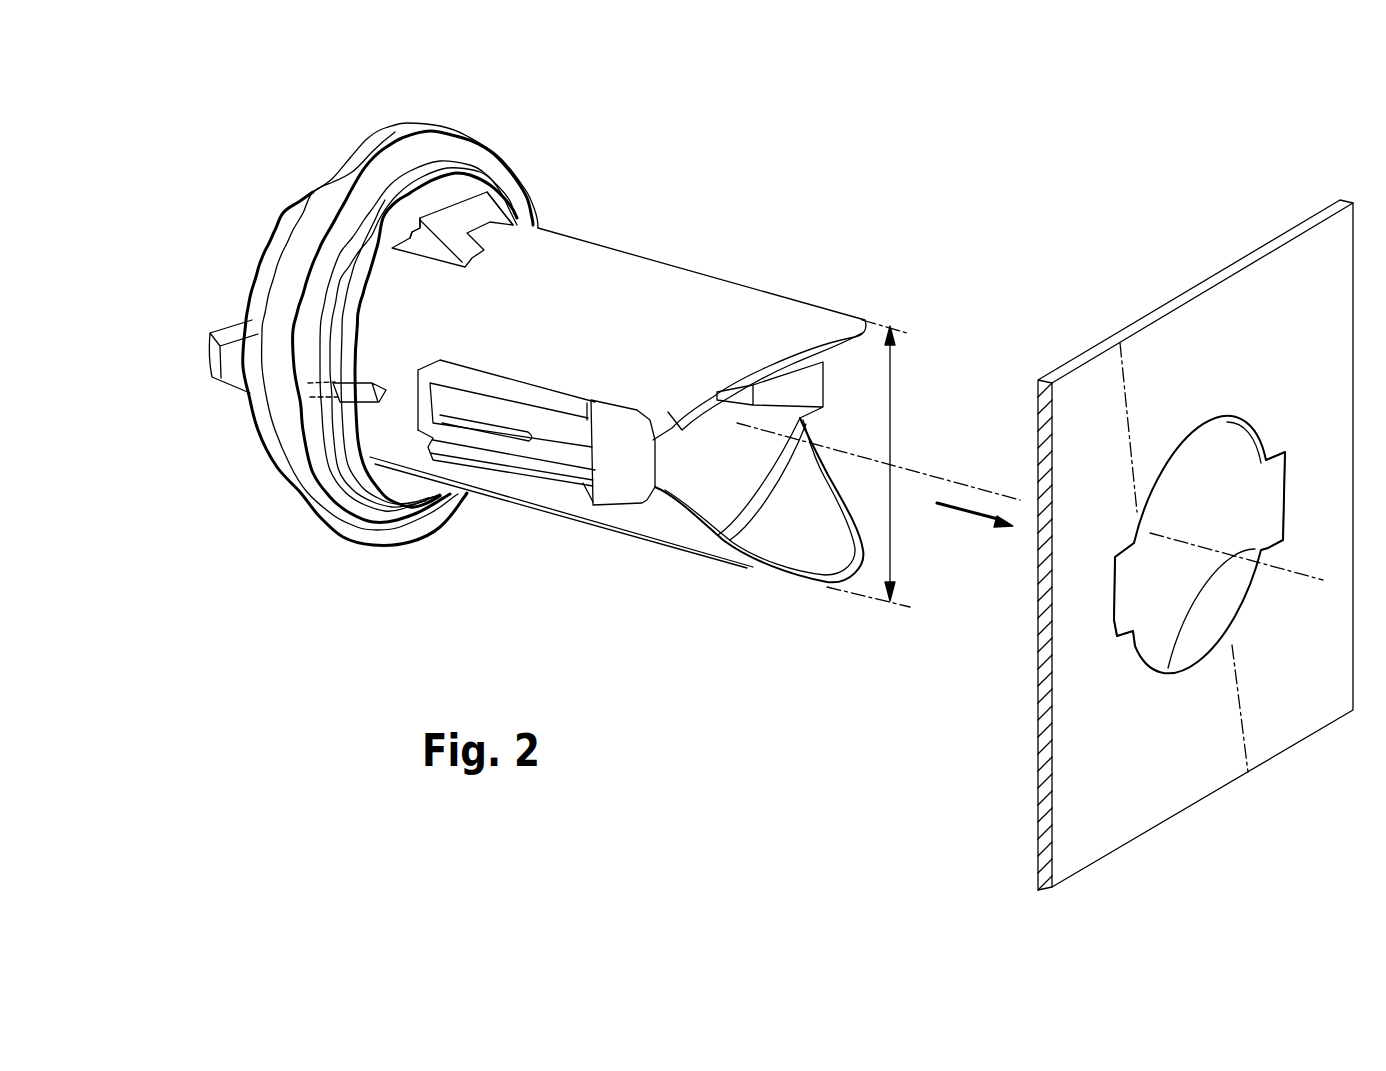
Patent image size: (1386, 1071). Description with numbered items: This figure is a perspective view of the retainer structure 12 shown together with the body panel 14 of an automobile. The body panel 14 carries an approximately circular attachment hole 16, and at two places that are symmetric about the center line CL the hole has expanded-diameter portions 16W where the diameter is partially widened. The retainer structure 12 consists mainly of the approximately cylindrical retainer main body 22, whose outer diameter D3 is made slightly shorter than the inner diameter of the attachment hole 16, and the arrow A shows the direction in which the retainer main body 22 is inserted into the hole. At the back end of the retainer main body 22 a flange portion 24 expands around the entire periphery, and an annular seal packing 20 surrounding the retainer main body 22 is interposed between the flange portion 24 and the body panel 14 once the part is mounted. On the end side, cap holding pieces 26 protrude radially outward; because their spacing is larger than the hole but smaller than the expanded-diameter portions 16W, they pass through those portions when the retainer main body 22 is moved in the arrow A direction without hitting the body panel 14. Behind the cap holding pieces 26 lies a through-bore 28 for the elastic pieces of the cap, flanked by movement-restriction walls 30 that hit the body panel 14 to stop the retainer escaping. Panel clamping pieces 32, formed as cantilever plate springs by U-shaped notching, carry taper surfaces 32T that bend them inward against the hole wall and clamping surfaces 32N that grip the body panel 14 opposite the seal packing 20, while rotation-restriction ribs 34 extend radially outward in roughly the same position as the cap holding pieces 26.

The retainer structure 12 is at (817, 208).
The body panel 14 is at (1297, 260).
The attachment hole 16 is at (1200, 427).
The expanded-diameter portions 16W is at (1290, 482).
The seal packing 20 is at (390, 530).
The retainer main body 22 is at (660, 256).
The flange portion 24 is at (412, 122).
The cap holding pieces 26 is at (617, 484).
The through-bore 28 is at (548, 452).
The movement-restriction walls 30 is at (455, 380).
The panel clamping pieces 32 is at (430, 242).
The clamping surfaces 32N is at (408, 236).
The taper surfaces 32T is at (512, 197).
The rotation-restriction ribs 34 is at (364, 403).
The arrow A is at (957, 510).
The outer diameter of the retainer main body D3 is at (892, 409).
The center line CL is at (1303, 574).